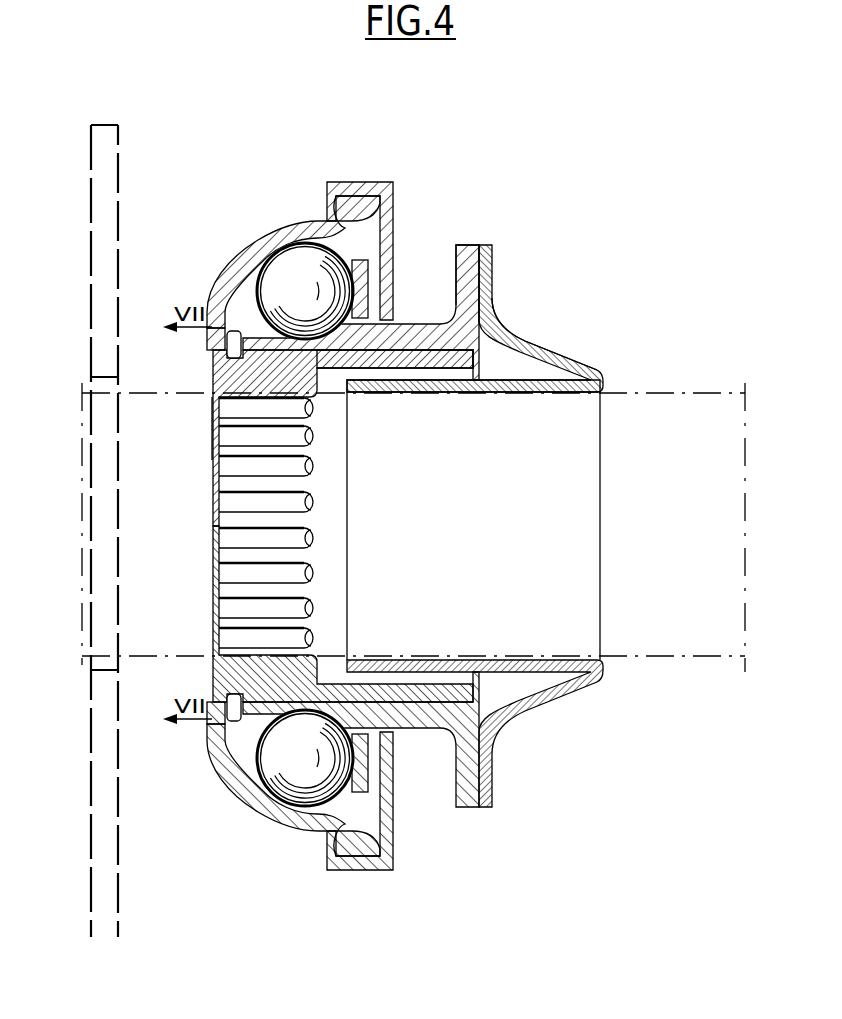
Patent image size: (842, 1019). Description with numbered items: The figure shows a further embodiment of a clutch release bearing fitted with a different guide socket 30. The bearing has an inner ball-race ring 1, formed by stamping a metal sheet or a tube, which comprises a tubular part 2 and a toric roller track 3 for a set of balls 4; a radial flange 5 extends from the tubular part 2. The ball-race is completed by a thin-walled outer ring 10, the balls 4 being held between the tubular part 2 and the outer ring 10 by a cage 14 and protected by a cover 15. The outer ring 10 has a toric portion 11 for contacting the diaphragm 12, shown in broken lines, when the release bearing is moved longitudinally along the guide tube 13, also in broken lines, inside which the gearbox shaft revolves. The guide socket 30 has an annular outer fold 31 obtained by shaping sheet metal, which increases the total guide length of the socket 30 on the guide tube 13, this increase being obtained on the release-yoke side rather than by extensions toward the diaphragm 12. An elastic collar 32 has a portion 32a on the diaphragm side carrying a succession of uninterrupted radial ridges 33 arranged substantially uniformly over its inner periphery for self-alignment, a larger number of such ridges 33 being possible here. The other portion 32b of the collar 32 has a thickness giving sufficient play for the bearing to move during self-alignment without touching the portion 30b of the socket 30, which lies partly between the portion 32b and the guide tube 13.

The inner ball-race ring 1 is at (435, 316).
The tubular part 2 is at (411, 335).
The toric roller track 3 is at (247, 336).
The balls 4 is at (298, 270).
The radial flange 5 is at (464, 256).
The outer ring 10 is at (250, 272).
The toric portion 11 is at (210, 318).
The diaphragm 12 is at (104, 195).
The guide tube 13 is at (125, 420).
The cage 14 is at (364, 275).
The cover 15 is at (355, 187).
The guide socket 30 is at (505, 288).
The portion of the guide socket 30b is at (462, 392).
The annular outer fold 31 is at (552, 342).
The elastic collar 32 is at (213, 385).
The portion of the elastic collar 32a is at (212, 421).
The portion of the elastic collar 32b is at (393, 350).
The radial ridges 33 is at (225, 607).